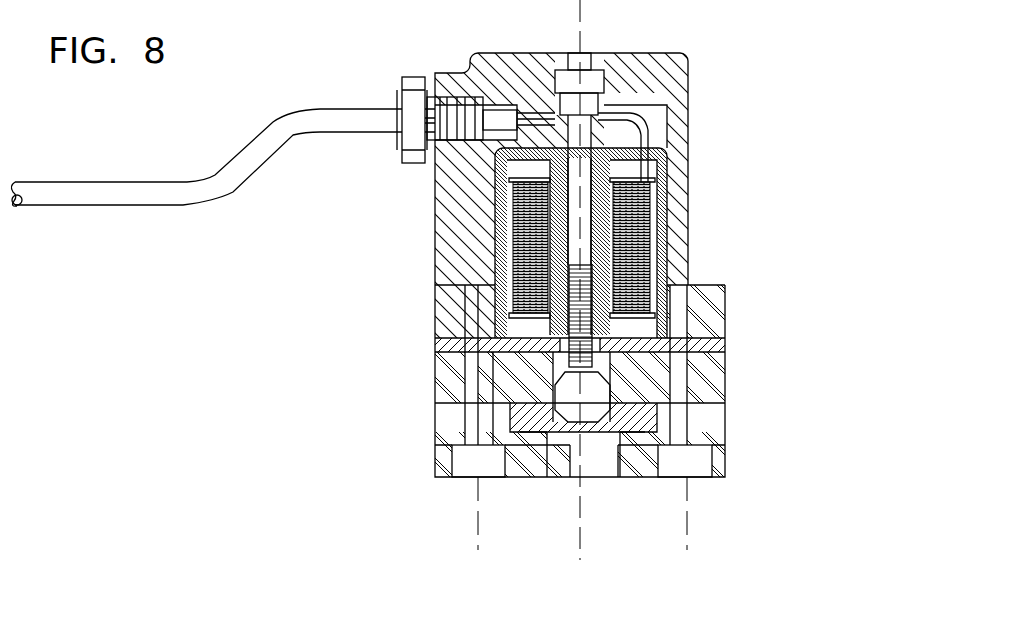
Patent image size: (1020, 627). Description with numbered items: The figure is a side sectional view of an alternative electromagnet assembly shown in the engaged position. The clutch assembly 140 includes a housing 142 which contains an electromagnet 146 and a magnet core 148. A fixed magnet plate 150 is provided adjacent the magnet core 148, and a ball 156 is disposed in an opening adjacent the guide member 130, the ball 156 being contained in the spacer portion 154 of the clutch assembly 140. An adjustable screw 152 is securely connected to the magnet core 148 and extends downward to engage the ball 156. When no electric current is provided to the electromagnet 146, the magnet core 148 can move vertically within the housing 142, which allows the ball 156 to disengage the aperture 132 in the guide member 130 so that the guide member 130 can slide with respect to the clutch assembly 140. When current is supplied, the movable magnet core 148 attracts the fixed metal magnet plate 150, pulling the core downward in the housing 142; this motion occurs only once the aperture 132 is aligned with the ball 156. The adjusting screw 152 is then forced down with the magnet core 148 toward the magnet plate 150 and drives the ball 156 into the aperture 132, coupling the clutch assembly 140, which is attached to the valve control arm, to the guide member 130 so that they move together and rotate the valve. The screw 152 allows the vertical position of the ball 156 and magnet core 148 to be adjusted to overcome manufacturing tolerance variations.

The guide member 130 is at (513, 415).
The aperture 132 is at (570, 423).
The clutch assembly 140 is at (740, 185).
The housing 142 is at (688, 73).
The electromagnet 146 is at (632, 242).
The magnet core 148 is at (647, 150).
The magnet plate 150 is at (727, 342).
The adjustable screw 152 is at (583, 357).
The spacer portion 154 is at (437, 358).
The ball 156 is at (565, 392).